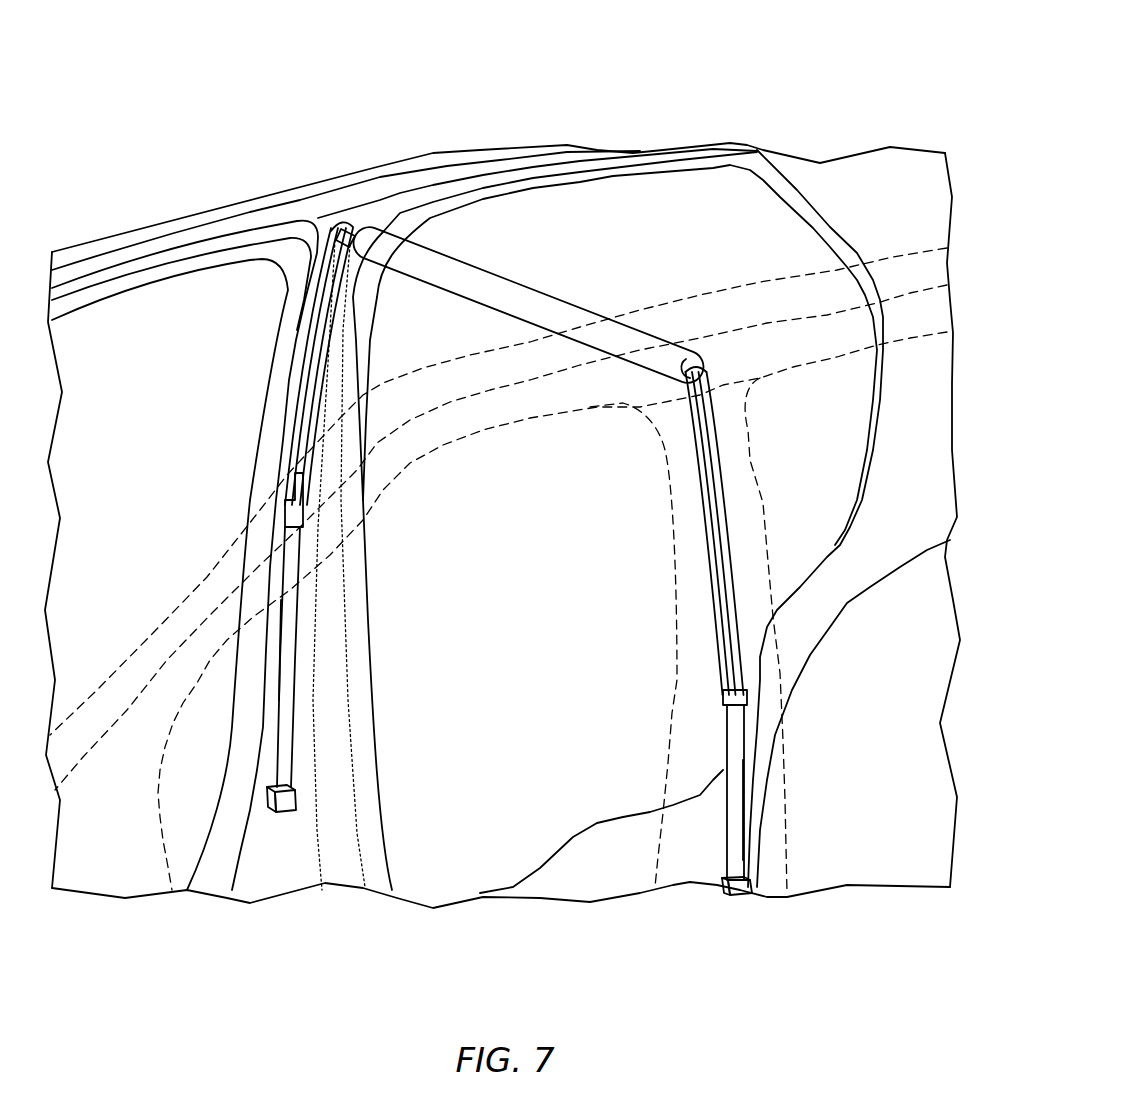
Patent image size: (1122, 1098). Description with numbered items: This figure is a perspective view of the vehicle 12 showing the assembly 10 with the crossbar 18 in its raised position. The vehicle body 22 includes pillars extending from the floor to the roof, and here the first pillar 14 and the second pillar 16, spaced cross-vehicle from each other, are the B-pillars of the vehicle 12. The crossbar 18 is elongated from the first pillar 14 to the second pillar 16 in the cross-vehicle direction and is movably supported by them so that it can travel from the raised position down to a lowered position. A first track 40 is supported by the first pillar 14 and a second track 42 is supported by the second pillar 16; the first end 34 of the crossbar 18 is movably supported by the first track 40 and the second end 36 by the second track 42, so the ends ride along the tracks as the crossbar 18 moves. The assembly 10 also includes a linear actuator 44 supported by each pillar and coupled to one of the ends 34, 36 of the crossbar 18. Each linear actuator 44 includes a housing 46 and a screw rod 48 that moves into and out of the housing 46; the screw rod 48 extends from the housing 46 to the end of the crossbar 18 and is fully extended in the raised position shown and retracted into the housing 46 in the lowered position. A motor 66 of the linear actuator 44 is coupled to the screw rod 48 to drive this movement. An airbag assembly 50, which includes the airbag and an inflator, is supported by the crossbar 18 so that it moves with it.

The assembly 10 is at (522, 246).
The vehicle 12 is at (723, 88).
The first pillar 14 is at (278, 365).
The second pillar 16 is at (783, 753).
The crossbar 18 is at (570, 317).
The vehicle body 22 is at (406, 153).
The first end 34 is at (348, 222).
The second end 36 is at (692, 360).
The first track 40 is at (280, 309).
The second track 42 is at (722, 472).
The linear actuator 44 is at (299, 663).
The housing 46 is at (283, 615).
The screw rod 48 is at (297, 472).
The airbag assembly 50 is at (537, 287).
The motor 66 is at (297, 796).